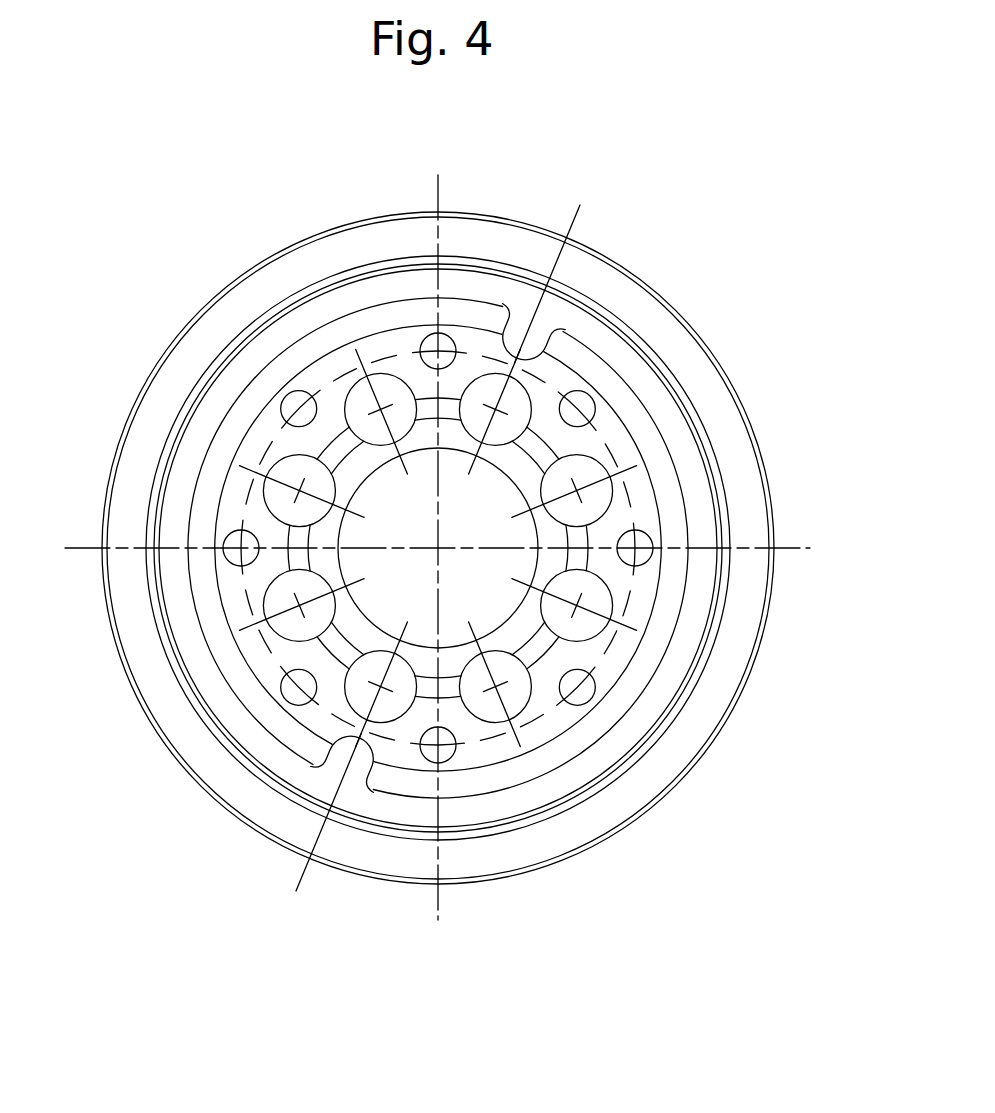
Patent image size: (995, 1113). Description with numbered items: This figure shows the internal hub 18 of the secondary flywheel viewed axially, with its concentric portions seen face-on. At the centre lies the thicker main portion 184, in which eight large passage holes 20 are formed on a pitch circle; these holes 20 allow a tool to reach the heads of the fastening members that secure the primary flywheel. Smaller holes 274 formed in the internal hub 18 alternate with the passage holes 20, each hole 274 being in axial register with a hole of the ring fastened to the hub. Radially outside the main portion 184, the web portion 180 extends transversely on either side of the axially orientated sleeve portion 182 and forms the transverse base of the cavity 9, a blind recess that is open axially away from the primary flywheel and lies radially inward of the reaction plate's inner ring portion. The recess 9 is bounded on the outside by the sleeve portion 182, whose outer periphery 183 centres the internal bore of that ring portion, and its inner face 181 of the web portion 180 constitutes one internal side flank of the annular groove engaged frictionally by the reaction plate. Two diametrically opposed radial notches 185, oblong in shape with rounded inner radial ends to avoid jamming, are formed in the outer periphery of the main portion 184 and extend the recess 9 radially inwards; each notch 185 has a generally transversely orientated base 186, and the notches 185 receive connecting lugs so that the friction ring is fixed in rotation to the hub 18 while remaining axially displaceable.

The internal hub 18 is at (262, 261).
The cavity 9 is at (211, 405).
The passage holes 20 is at (594, 492).
The hole 274 is at (642, 558).
The radial notch 185 is at (516, 366).
The transverse base 186 is at (537, 350).
The main portion 184 is at (326, 722).
The web portion 180 is at (343, 868).
The inner face 181 is at (500, 860).
The sleeve portion 182 is at (570, 806).
The outer periphery 183 is at (690, 700).